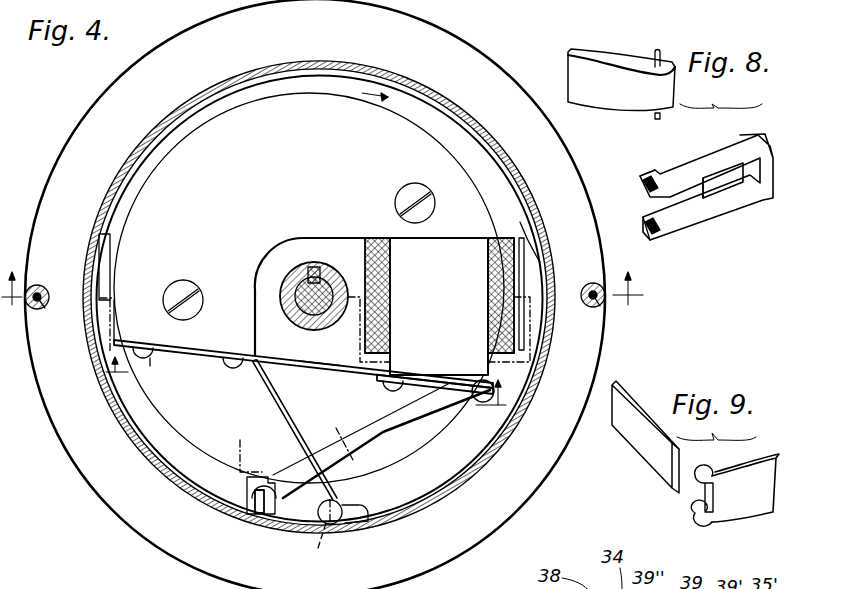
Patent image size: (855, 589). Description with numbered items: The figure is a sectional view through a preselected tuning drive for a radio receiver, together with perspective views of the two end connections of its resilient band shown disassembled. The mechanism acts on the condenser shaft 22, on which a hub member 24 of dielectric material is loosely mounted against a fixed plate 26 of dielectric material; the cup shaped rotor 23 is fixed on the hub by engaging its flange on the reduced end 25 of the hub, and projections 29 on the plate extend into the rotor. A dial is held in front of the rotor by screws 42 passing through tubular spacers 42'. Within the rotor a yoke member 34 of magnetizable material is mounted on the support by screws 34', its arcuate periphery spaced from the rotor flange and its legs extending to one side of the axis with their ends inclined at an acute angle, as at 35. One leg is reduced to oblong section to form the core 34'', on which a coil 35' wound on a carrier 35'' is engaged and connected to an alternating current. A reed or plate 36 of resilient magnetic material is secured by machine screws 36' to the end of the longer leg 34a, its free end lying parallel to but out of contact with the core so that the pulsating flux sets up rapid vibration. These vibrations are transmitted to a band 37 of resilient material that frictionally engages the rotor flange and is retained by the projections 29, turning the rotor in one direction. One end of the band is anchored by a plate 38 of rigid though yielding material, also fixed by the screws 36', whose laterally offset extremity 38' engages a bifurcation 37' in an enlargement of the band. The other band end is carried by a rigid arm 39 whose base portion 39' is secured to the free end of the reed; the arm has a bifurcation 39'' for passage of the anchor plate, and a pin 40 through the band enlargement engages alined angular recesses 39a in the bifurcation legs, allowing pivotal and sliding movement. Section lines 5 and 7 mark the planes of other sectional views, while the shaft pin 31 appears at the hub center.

In FIG. 4, the fixed plate 26 is at (97, 487).
In FIG. 4, the rotor 23 is at (150, 463).
In FIG. 4, the band of resilient material 37 is at (310, 299).
In FIG. 8, the band of resilient material 37 is at (621, 100).
In FIG. 9, the band of resilient material 37 is at (745, 503).
In FIG. 4, the yoke member 34 is at (309, 288).
In FIG. 4, the projections 29 is at (94, 250).
In FIG. 4, the screws 42 is at (315, 294).
In FIG. 4, the tubular spacers 42' is at (352, 319).
In FIG. 4, the section line 5 is at (322, 277).
In FIG. 4, the section line 7 is at (309, 378).
In FIG. 4, the screws 34' is at (299, 234).
In FIG. 4, the end of reduced diameter of the hub member 25 is at (294, 262).
In FIG. 4, the hub member 24 is at (320, 328).
In FIG. 4, the condenser shaft 22 is at (326, 289).
In FIG. 4, the pin 31 is at (318, 265).
In FIG. 4, the core leg 34'' is at (439, 306).
In FIG. 4, the carrier 35'' is at (544, 272).
In FIG. 4, the coil 35' is at (555, 240).
In FIG. 4, the inclined ends of the yoke legs 35 is at (303, 352).
In FIG. 4, the leg of the yoke member 34a is at (230, 369).
In FIG. 4, the reed or plate 36 is at (321, 390).
In FIG. 4, the machine screws 36' is at (190, 401).
In FIG. 4, the anchor plate 38 is at (297, 430).
In FIG. 9, the anchor plate 38 is at (637, 437).
In FIG. 4, the laterally offset extremity of the anchor plate 38' is at (312, 554).
In FIG. 9, the laterally offset extremity of the anchor plate 38' is at (659, 486).
In FIG. 4, the rigid arm 39 is at (381, 440).
In FIG. 8, the rigid arm 39 is at (707, 194).
In FIG. 4, the base portion of the arm 39' is at (468, 415).
In FIG. 4, the angular recesses 39a is at (316, 508).
In FIG. 8, the angular recesses 39a is at (643, 226).
In FIG. 8, the bifurcation of the arm 39'' is at (714, 221).
In FIG. 4, the pin 40 is at (263, 516).
In FIG. 8, the pin 40 is at (660, 119).
In FIG. 4, the bifurcation of the band 37' is at (366, 535).
In FIG. 9, the bifurcation of the band 37' is at (710, 508).